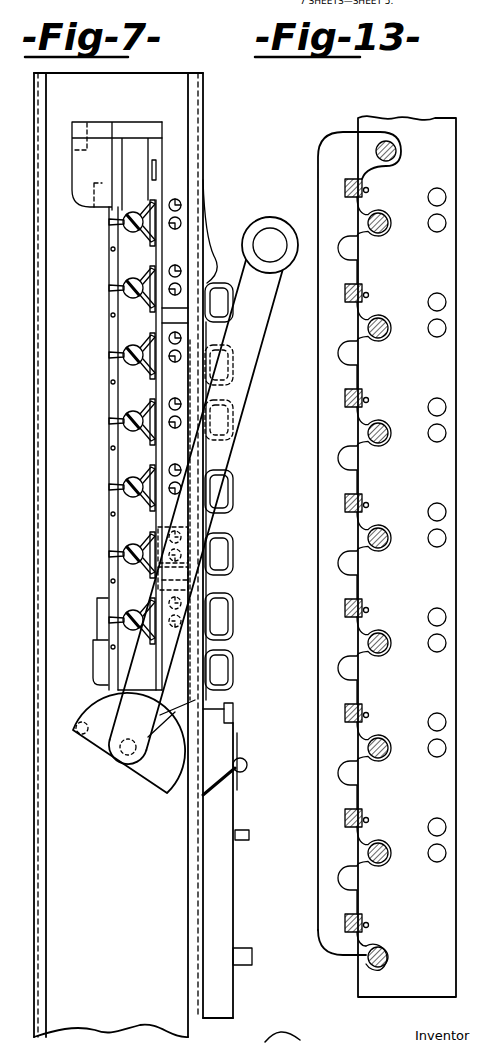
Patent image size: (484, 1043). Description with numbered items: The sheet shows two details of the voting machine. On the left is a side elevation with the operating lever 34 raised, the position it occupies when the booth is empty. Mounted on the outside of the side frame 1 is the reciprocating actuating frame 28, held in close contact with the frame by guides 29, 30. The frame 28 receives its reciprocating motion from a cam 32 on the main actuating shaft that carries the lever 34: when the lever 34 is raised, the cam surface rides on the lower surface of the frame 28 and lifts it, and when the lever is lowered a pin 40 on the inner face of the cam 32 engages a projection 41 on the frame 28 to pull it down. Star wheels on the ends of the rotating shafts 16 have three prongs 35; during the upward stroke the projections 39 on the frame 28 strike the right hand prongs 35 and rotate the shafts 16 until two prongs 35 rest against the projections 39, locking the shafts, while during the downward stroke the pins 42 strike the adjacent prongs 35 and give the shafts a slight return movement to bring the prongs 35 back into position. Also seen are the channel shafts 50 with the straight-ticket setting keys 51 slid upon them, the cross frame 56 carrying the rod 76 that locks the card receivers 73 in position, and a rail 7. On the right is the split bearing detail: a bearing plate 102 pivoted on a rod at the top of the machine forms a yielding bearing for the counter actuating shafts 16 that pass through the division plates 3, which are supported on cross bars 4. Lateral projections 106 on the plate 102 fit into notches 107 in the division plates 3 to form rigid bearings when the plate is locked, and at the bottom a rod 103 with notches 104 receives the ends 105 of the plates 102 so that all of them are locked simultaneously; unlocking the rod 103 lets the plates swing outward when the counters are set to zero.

In FIG. 7, the side frame 1 is at (133, 555).
In FIG. 13, the division plate 3 is at (407, 556).
In FIG. 13, the cross bar 4 is at (367, 300).
In FIG. 7, the rail 7 is at (175, 472).
In FIG. 7, the rotating shaft 16 is at (120, 362).
In FIG. 13, the rotating shaft 16 is at (386, 222).
In FIG. 7, the reciprocating actuating frame 28 is at (122, 121).
In FIG. 7, the guide 29 is at (87, 165).
In FIG. 7, the guide 30 is at (100, 660).
In FIG. 7, the cam 32 is at (150, 773).
In FIG. 7, the operating lever 34 is at (236, 364).
In FIG. 7, the prong 35 is at (118, 287).
In FIG. 7, the projection 39 is at (162, 202).
In FIG. 7, the pin 40 is at (80, 735).
In FIG. 7, the projection 41 is at (187, 703).
In FIG. 7, the pin 42 is at (111, 316).
In FIG. 7, the channel shaft 50 is at (178, 204).
In FIG. 7, the straight-ticket setting key 51 is at (213, 258).
In FIG. 7, the cross frame 56 is at (234, 716).
In FIG. 7, the card receiver 73 is at (238, 813).
In FIG. 7, the rod 76 is at (248, 765).
In FIG. 13, the bearing plate 102 is at (332, 487).
In FIG. 13, the rod 103 is at (388, 160).
In FIG. 13, the notch 104 is at (388, 969).
In FIG. 13, the end 105 is at (360, 940).
In FIG. 13, the lateral projection 106 is at (363, 427).
In FIG. 13, the notch 107 is at (382, 443).